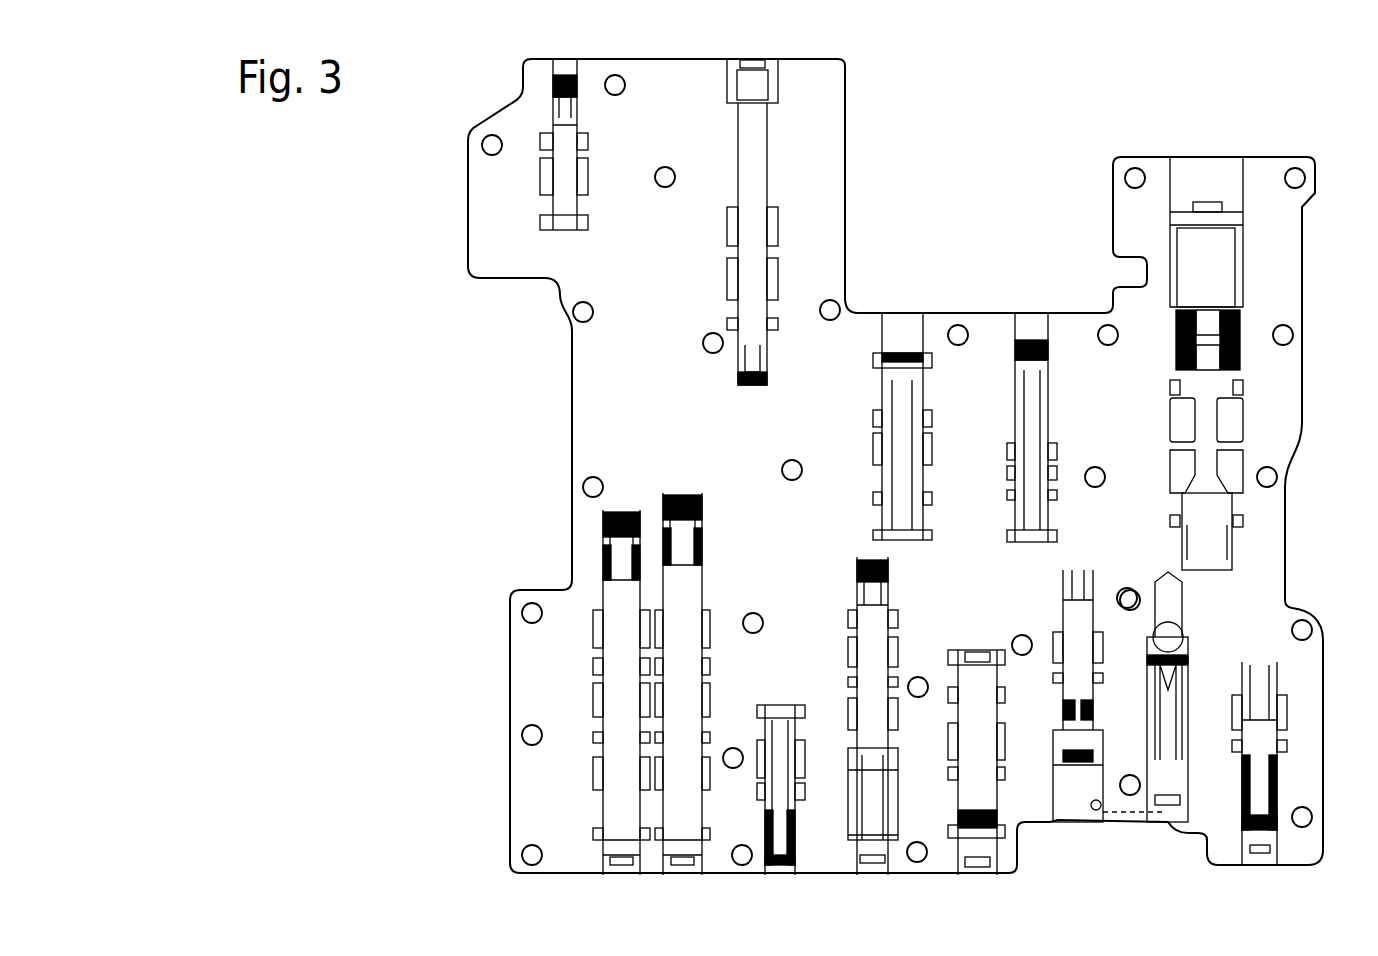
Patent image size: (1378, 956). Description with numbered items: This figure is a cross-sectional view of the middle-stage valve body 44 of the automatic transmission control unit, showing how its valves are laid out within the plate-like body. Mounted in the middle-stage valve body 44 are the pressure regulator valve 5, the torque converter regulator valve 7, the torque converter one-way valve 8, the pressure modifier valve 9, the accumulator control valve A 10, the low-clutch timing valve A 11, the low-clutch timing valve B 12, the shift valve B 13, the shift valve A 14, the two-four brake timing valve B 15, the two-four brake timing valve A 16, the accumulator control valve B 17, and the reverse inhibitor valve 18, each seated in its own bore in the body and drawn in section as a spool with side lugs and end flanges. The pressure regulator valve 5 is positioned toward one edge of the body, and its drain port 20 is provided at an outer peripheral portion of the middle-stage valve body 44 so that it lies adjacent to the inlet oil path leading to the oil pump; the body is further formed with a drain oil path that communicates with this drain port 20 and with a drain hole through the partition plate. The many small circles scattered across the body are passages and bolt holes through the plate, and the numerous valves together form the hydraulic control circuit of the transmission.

The middle-stage valve body 44 is at (852, 190).
The 2–4 brake timing valve B 15 is at (583, 240).
The 2–4 brake timing valve A 16 is at (782, 262).
The accumulator control valve B 17 is at (937, 462).
The reverse inhibitor valve 18 is at (1057, 406).
The pressure regulator valve 5 is at (1245, 330).
The drain port 20 is at (1237, 430).
The shift valve A 14 is at (622, 505).
The shift valve B 13 is at (705, 543).
The low-clutch timing valve B 12 is at (780, 700).
The low-clutch timing valve A 11 is at (902, 613).
The accumulator control valve A 10 is at (975, 648).
The pressure modifier valve 9 is at (1102, 727).
The torque converter one-way valve 8 is at (1188, 628).
The torque converter regulator valve 7 is at (1290, 776).